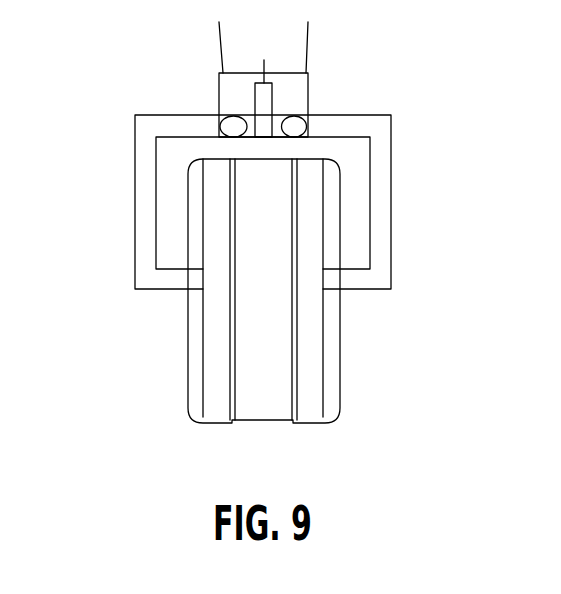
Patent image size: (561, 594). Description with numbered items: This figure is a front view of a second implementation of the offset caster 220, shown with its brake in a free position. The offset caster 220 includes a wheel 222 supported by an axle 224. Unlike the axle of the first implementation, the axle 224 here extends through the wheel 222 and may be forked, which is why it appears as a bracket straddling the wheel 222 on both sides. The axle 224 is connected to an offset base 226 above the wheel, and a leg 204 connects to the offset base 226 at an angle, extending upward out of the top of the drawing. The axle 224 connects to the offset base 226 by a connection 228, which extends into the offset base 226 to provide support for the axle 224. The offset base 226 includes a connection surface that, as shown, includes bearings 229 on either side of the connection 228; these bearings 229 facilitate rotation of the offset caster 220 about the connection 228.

The offset caster 220 is at (168, 45).
The leg 204 is at (307, 37).
The offset base 226 is at (307, 55).
The connection 228 is at (276, 71).
The bearings 229 is at (307, 123).
The axle 224 is at (163, 289).
The wheel 222 is at (340, 383).